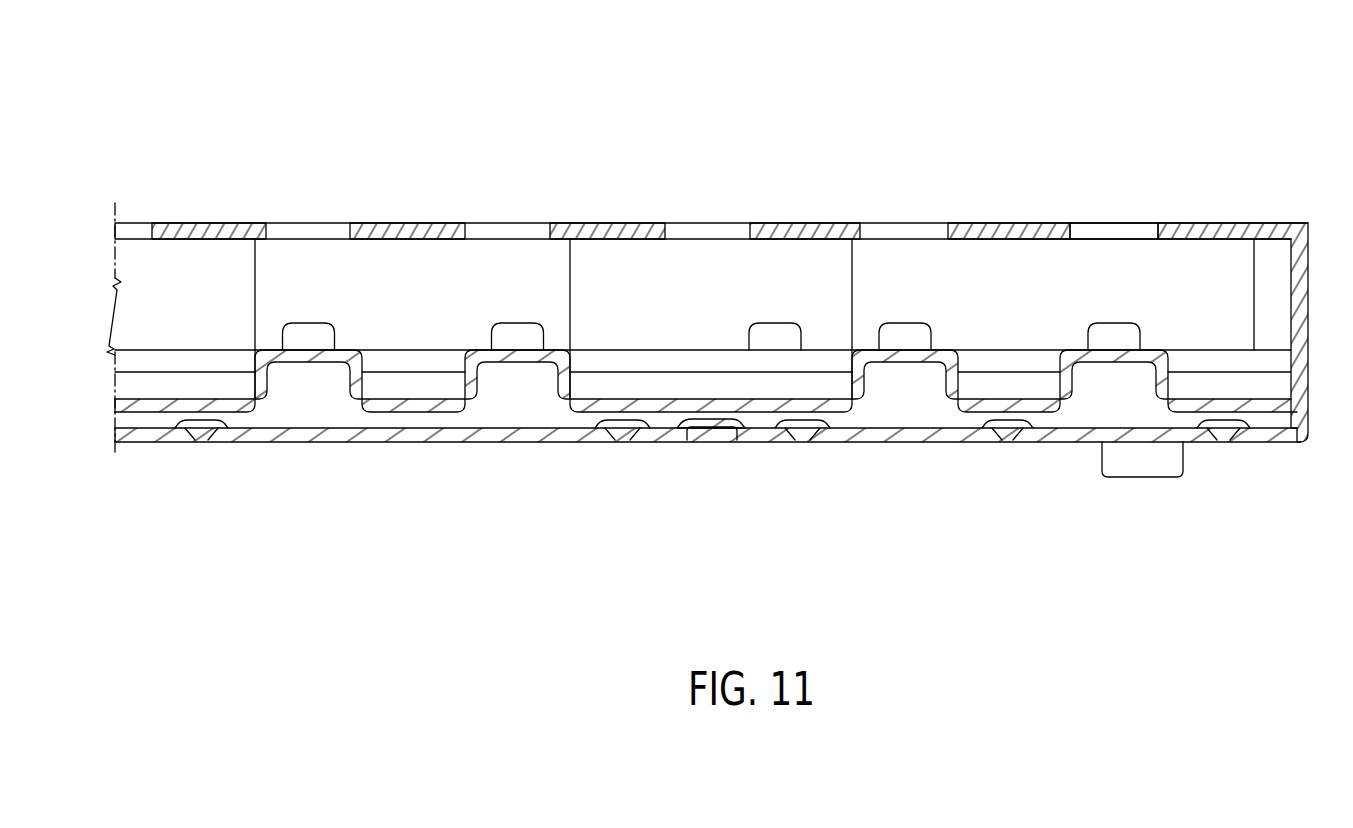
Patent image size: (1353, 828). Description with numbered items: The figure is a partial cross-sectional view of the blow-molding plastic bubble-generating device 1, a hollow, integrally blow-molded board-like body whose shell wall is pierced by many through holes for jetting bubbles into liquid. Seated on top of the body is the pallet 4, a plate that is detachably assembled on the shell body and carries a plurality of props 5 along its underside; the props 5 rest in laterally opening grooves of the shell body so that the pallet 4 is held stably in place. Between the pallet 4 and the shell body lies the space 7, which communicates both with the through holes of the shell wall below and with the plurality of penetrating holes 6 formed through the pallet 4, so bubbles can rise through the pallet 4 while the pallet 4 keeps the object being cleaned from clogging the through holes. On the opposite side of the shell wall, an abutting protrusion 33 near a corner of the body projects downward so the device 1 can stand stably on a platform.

The blow-molding plastic bubble-generating device 1 is at (722, 311).
The pallet 4 is at (1007, 224).
The props 5 is at (1297, 288).
The penetrating holes 6 is at (1117, 230).
The space 7 is at (212, 305).
The abutting protrusion 33 is at (1147, 470).